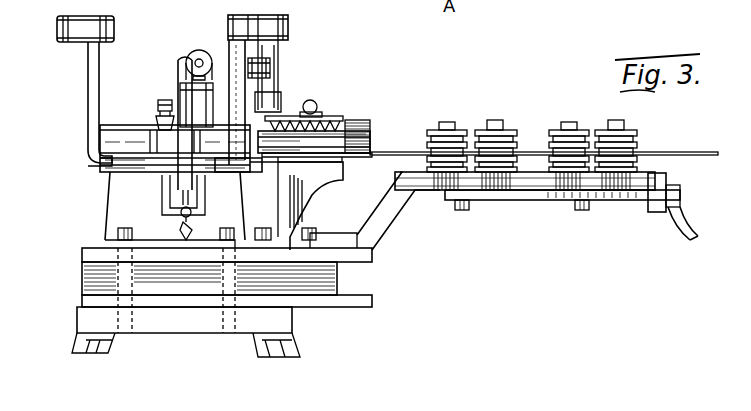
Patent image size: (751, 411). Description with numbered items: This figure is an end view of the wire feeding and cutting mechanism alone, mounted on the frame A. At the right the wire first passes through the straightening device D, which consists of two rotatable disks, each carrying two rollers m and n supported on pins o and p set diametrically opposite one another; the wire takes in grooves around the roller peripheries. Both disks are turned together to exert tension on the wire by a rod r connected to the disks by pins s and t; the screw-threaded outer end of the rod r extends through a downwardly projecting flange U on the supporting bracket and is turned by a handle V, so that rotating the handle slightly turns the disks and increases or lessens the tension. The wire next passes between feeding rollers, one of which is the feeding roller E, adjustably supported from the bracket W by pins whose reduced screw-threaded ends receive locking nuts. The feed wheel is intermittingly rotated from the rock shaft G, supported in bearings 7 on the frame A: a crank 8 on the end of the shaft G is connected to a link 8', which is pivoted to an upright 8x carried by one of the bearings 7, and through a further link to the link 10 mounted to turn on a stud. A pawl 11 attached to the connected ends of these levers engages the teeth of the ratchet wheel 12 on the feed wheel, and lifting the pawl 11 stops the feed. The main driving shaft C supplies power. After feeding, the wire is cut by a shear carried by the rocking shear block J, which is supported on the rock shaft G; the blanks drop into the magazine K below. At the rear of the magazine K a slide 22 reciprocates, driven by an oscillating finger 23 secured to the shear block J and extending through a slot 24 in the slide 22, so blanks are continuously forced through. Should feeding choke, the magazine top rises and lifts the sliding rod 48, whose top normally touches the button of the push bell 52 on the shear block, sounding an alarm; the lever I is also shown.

The lever I is at (88, 84).
The rock shaft G is at (107, 166).
The rocking shear block J is at (160, 123).
The bearings 7 is at (133, 135).
The push bell 52 is at (195, 60).
The sliding rod 48 is at (200, 100).
The upright 8x is at (237, 55).
The link 8' is at (283, 76).
The crank 8 is at (286, 71).
The pawl 11 is at (283, 118).
The link 10 is at (314, 111).
The feeding roller E is at (338, 130).
The ratchet wheel 12 is at (365, 125).
The bracket W is at (335, 182).
The frame A is at (280, 300).
The slide 22 is at (200, 188).
The oscillating finger 23 is at (182, 208).
The slot 24 is at (180, 190).
The magazine K is at (430, 192).
The pin s is at (462, 200).
The rod r is at (528, 198).
The straightening device D is at (540, 180).
The pin t is at (590, 200).
The downwardly projecting flange U is at (655, 210).
The handle V is at (690, 220).
The roller m is at (508, 139).
The pin p is at (455, 122).
The pin o is at (497, 120).
The roller n is at (515, 130).
The main driving shaft C is at (623, 93).